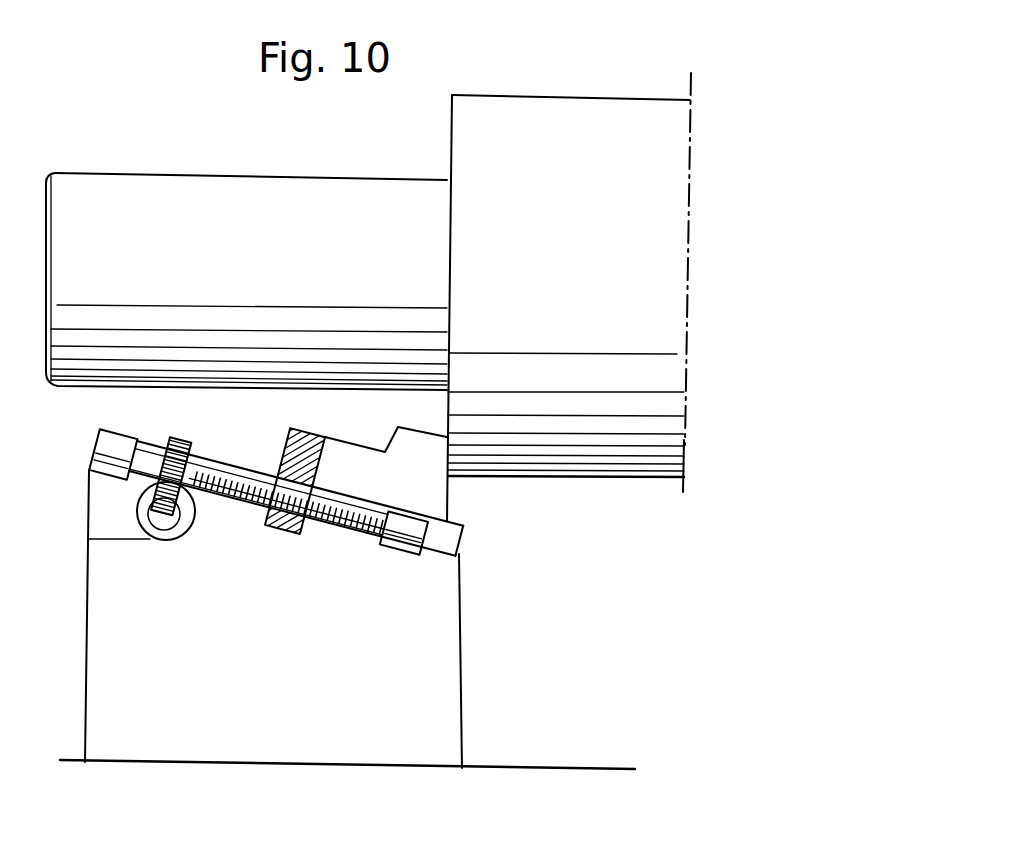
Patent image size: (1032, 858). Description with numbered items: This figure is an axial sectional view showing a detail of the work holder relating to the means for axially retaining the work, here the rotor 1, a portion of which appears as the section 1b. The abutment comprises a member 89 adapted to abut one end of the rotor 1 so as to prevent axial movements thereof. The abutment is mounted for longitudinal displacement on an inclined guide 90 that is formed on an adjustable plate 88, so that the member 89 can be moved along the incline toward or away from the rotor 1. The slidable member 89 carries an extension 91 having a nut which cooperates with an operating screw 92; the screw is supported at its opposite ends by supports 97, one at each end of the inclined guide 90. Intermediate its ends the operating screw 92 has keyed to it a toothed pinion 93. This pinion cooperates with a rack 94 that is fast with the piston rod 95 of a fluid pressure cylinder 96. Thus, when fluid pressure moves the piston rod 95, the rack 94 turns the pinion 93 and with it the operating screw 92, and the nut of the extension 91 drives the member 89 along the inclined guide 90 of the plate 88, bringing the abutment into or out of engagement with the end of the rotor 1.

The rotor 1 is at (551, 117).
The housing side section 1b is at (242, 195).
The adjustable plate 88 is at (452, 616).
The member 89 is at (403, 445).
The inclined guide 90 is at (453, 533).
The extension 91 is at (278, 535).
The operating screw 92 is at (335, 527).
The toothed pinion 93 is at (180, 440).
The rack 94 is at (178, 512).
The piston rod 95 is at (177, 527).
The fluid pressure cylinder 96 is at (157, 533).
The supports 97 is at (120, 443).